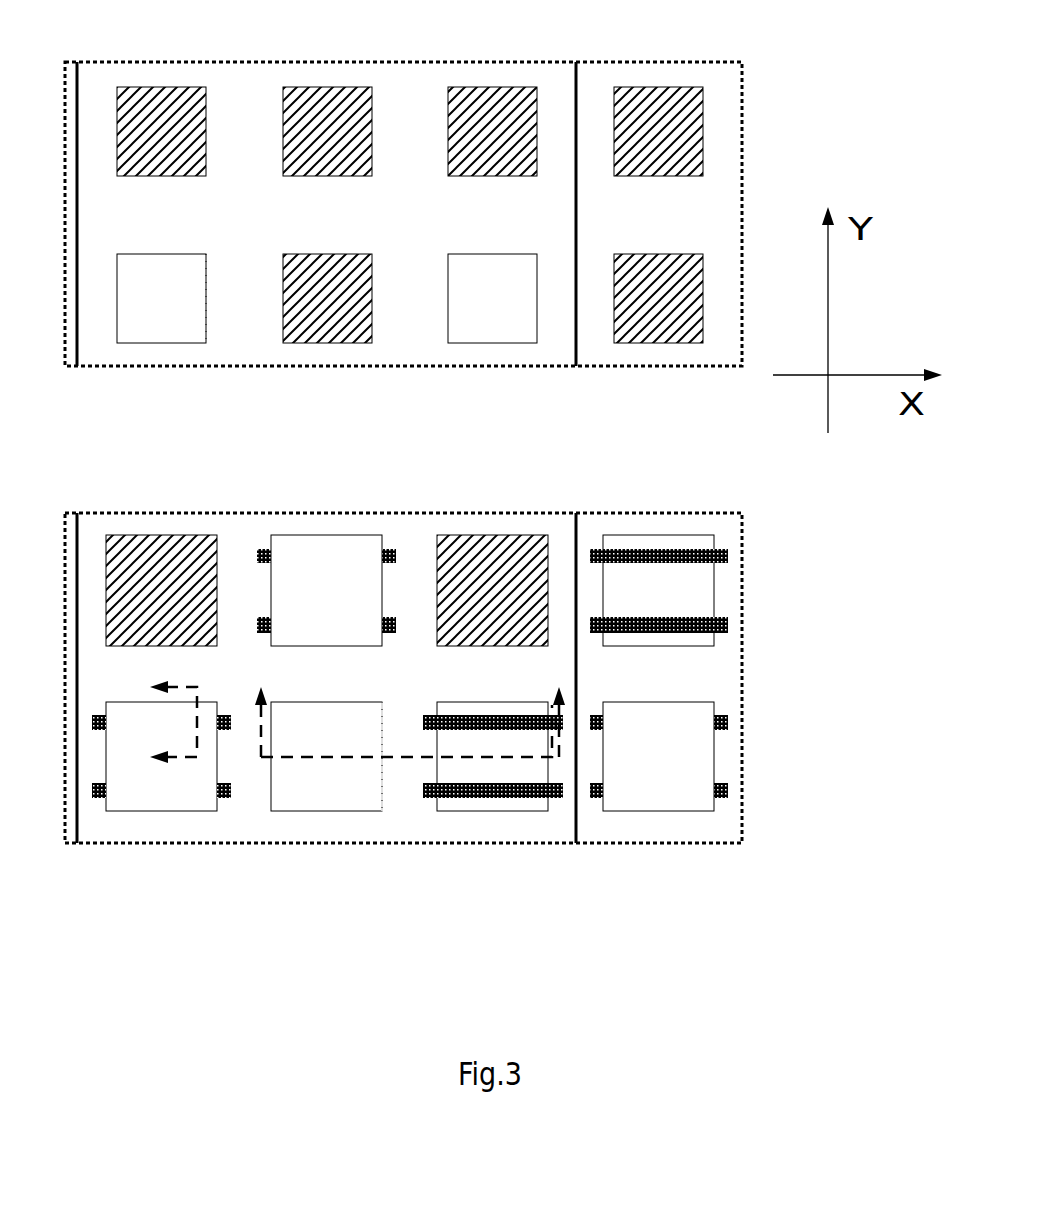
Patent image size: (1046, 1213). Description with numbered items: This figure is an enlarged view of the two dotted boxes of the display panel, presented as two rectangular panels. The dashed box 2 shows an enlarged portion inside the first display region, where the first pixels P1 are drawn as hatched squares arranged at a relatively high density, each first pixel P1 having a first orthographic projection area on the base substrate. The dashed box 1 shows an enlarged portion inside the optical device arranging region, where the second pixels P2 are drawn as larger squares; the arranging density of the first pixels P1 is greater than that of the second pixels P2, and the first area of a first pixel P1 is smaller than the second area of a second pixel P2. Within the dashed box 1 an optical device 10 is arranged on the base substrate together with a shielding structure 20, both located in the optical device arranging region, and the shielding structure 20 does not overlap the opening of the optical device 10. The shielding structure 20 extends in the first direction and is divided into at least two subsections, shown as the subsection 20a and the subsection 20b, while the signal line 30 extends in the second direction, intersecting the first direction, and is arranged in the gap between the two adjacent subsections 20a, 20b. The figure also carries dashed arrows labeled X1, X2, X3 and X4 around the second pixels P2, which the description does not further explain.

The dashed box 1 is at (705, 513).
The dashed box 2 is at (105, 367).
The first pixel P1 is at (631, 100).
The second pixel P2 is at (288, 800).
The optical device 10 is at (459, 805).
The shielding structure 20 is at (575, 866).
The subsection 20a is at (592, 798).
The subsection 20b is at (557, 798).
The signal line 30 is at (573, 543).
The first movement direction X1 is at (397, 702).
The second movement direction X2 is at (564, 706).
The third movement direction X3 is at (152, 710).
The fourth movement direction X4 is at (151, 754).